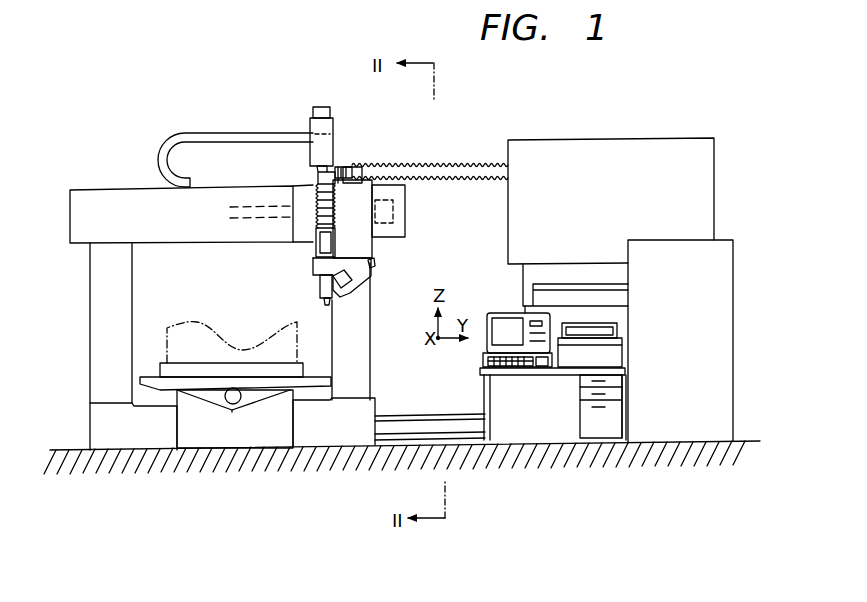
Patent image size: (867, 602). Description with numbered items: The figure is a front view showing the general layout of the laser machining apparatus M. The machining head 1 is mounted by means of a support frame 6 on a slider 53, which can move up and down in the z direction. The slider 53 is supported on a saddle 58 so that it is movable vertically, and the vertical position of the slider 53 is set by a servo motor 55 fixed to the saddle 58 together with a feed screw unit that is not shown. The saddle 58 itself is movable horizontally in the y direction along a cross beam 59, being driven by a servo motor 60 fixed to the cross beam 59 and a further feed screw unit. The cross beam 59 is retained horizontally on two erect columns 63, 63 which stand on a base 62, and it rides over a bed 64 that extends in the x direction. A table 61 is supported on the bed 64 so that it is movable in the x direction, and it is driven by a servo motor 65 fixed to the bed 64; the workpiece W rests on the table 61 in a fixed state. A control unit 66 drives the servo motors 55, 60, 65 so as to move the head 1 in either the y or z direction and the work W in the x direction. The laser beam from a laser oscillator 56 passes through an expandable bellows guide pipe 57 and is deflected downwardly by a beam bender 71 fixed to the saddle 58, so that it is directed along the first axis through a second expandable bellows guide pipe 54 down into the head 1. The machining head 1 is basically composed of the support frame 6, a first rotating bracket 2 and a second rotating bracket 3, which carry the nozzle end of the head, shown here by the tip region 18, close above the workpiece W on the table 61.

The machining head 1 is at (378, 262).
The first rotating bracket 2 is at (356, 275).
The second rotating bracket 3 is at (334, 294).
The support frame 6 is at (322, 245).
The nozzle tip 18 is at (323, 300).
The slider 53 is at (323, 155).
The expandable bellows guide pipe 54 is at (330, 207).
The servo motor 55 is at (335, 121).
The laser oscillator 56 is at (611, 204).
The expandable bellows guide pipe 57 is at (447, 152).
The saddle 58 is at (358, 197).
The cross beam 59 is at (181, 234).
The servo motor 60 is at (394, 205).
The table 61 is at (165, 368).
The base 62 is at (368, 410).
The columns 63 is at (100, 368).
The bed 64 is at (240, 432).
The servo motor 65 is at (227, 410).
The control unit 66 is at (723, 355).
The beam bender 71 is at (312, 161).
The laser machining apparatus M is at (142, 138).
The workpiece W is at (190, 323).